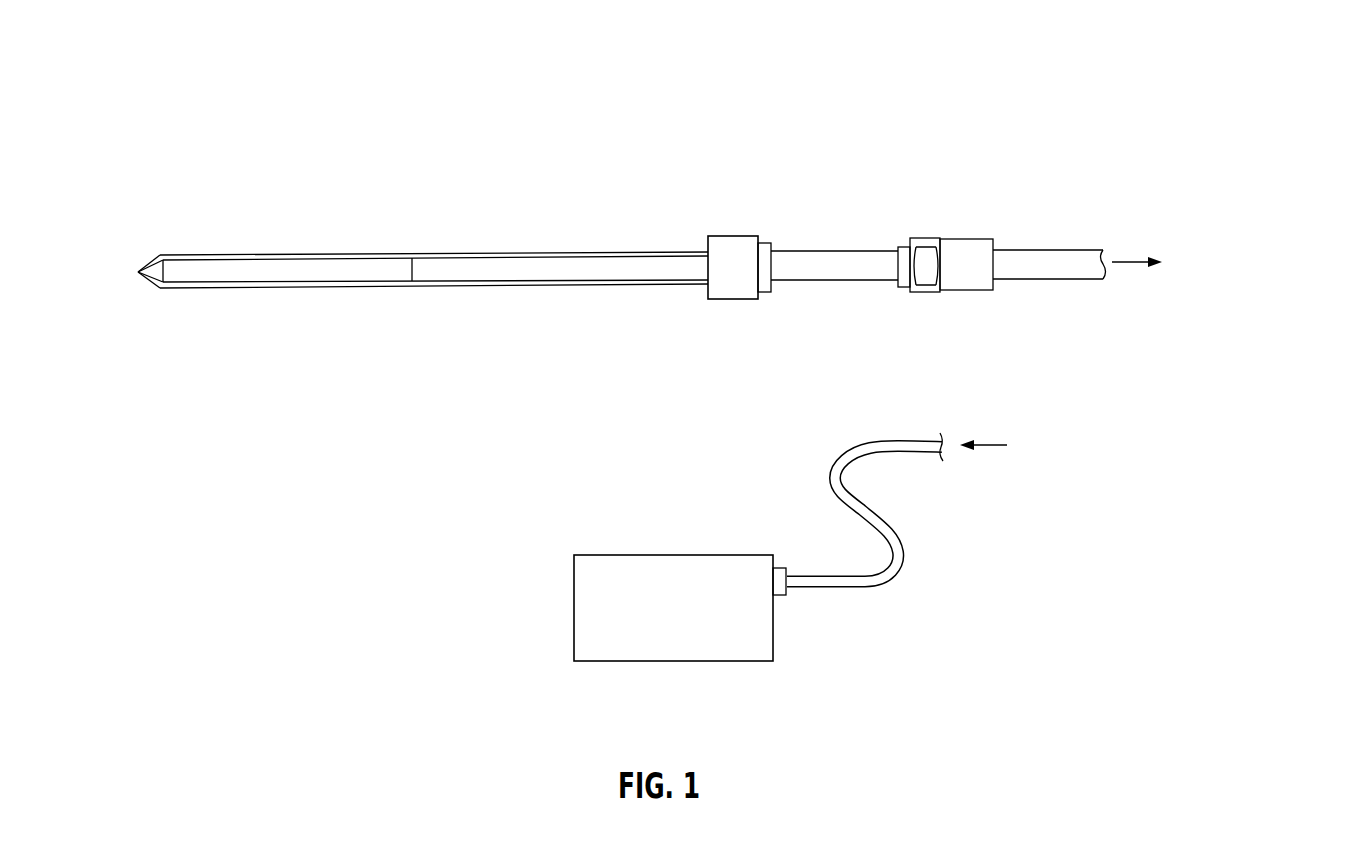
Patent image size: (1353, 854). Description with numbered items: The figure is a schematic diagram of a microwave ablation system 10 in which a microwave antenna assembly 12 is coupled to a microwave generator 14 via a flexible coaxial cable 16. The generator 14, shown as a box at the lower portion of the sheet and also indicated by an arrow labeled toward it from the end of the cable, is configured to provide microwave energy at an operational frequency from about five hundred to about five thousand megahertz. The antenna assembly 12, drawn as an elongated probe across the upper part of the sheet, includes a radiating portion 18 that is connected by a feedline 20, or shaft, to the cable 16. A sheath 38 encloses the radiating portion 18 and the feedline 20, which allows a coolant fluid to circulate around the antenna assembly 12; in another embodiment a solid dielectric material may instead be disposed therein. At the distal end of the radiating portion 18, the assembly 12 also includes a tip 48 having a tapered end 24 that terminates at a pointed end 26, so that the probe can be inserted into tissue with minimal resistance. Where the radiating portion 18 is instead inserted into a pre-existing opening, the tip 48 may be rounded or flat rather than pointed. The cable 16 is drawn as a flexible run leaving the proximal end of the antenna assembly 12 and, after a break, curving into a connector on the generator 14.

The microwave ablation system 10 is at (238, 106).
The microwave antenna assembly 12 is at (676, 181).
The microwave generator 14 is at (661, 637).
The flexible coaxial cable 16 is at (1042, 249).
The radiating portion 18 is at (268, 257).
The feedline 20 is at (528, 257).
The tapered end 24 is at (158, 259).
The pointed end 26 is at (140, 272).
The sheath 38 is at (683, 250).
The tip 48 is at (157, 289).